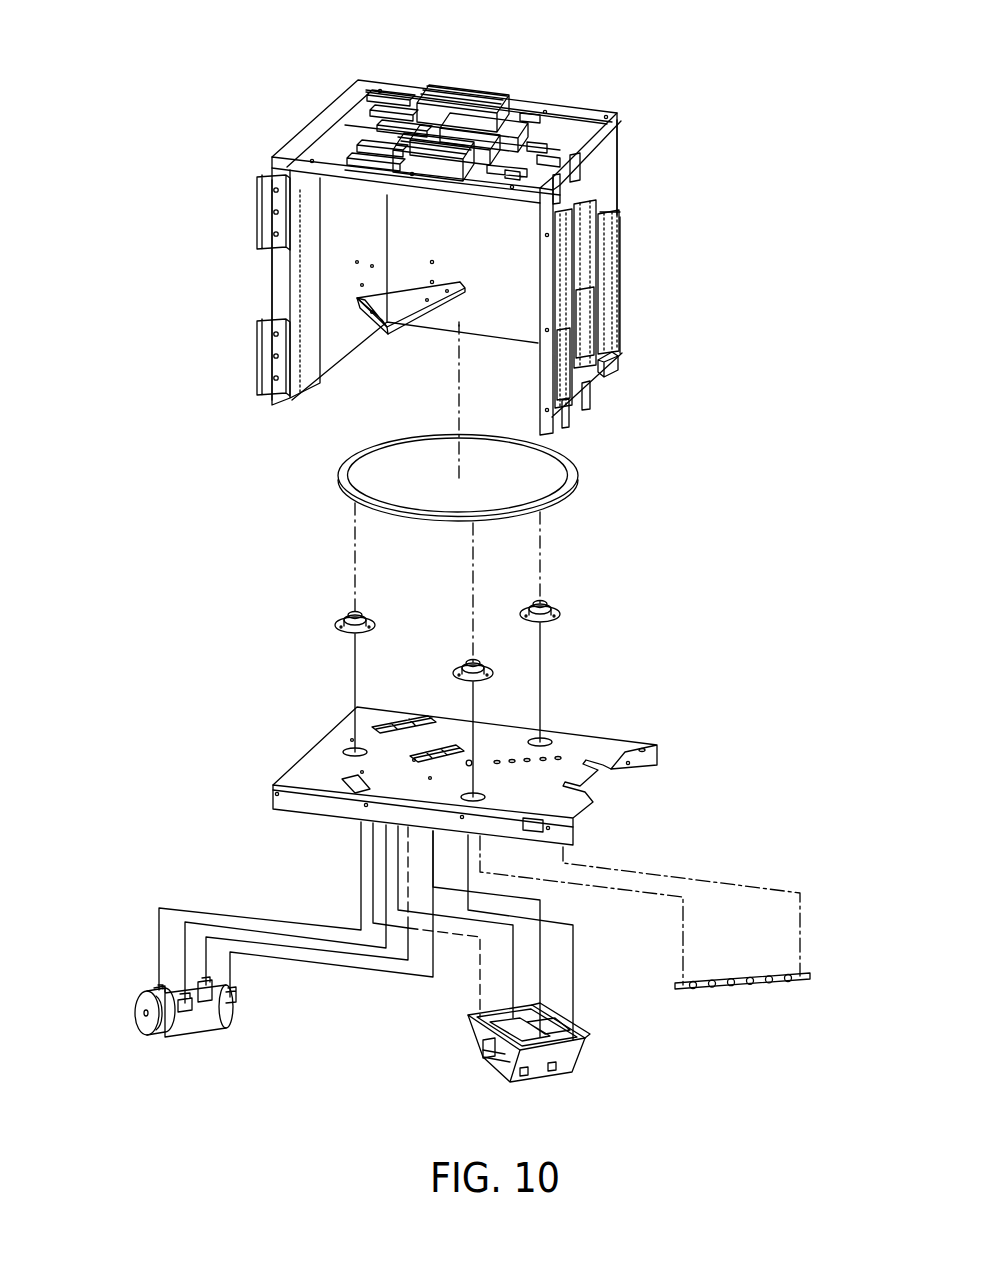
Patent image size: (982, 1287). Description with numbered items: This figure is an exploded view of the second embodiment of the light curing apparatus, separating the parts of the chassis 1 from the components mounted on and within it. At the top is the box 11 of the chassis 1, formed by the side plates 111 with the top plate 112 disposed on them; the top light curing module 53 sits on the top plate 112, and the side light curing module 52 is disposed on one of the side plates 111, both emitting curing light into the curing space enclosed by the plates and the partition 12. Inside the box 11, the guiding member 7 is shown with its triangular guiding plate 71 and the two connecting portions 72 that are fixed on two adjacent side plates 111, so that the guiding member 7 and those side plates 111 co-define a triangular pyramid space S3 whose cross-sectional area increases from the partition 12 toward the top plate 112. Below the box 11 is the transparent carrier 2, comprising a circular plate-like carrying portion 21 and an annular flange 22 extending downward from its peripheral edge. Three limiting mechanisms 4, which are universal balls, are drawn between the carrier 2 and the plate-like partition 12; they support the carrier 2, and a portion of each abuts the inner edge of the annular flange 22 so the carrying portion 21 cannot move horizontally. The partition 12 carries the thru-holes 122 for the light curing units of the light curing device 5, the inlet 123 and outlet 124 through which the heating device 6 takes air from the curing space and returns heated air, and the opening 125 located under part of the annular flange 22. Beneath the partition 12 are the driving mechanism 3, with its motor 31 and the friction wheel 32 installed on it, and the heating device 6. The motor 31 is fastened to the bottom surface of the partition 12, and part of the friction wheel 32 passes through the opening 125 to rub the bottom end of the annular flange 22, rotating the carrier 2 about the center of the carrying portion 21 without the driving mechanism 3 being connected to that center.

The chassis 1 is at (130, 490).
The box 11 is at (313, 113).
The side plates 111 is at (612, 167).
The top plate 112 is at (566, 128).
The partition 12 is at (300, 742).
The thru-holes 122 is at (478, 760).
The inlet 123 is at (445, 746).
The outlet 124 is at (386, 726).
The opening 125 is at (347, 782).
The carrier 2 is at (588, 487).
The carrying portion 21 is at (371, 456).
The annular flange 22 is at (344, 483).
The driving mechanism 3 is at (206, 1086).
The motor 31 is at (198, 1030).
The friction wheel 32 is at (150, 1035).
The limiting mechanisms 4 is at (562, 614).
The light curing device 5 is at (130, 598).
The side light curing module 52 is at (600, 399).
The top light curing module 53 is at (400, 100).
The heating device 6 is at (470, 1050).
The guiding member 7 is at (420, 380).
The guiding plate 71 is at (398, 318).
The connecting portions 72 is at (362, 320).
The triangular pyramid space S3 is at (403, 280).